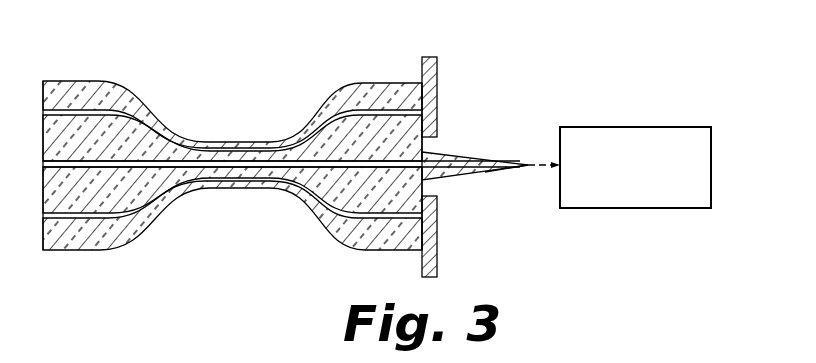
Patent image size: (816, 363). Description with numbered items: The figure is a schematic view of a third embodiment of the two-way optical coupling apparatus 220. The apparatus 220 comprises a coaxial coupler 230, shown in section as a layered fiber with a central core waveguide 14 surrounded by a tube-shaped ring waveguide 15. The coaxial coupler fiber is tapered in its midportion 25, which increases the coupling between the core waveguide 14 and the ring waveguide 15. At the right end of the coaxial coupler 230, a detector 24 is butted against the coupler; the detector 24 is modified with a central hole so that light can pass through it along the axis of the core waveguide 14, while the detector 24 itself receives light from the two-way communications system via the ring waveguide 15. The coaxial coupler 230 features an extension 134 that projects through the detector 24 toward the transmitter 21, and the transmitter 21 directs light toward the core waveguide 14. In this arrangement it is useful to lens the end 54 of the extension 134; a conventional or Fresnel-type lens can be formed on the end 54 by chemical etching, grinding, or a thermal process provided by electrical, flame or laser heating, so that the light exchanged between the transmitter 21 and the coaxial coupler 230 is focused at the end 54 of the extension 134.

The apparatus 220 is at (377, 151).
The midportion 25 is at (285, 145).
The coaxial coupler 230 is at (343, 93).
The ring waveguide 15 is at (394, 115).
The core waveguide 14 is at (385, 168).
The extension 134 is at (472, 154).
The end 54 is at (508, 176).
The detector 24 is at (437, 70).
The transmitter 21 is at (647, 138).